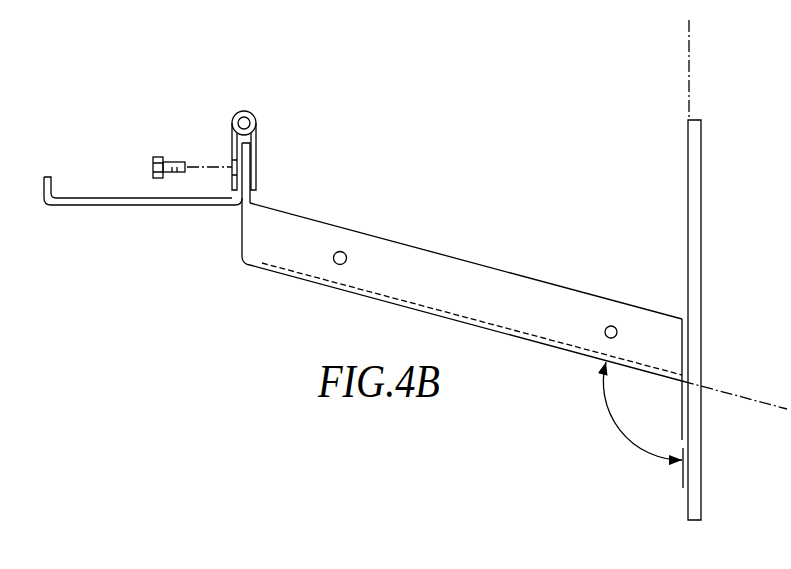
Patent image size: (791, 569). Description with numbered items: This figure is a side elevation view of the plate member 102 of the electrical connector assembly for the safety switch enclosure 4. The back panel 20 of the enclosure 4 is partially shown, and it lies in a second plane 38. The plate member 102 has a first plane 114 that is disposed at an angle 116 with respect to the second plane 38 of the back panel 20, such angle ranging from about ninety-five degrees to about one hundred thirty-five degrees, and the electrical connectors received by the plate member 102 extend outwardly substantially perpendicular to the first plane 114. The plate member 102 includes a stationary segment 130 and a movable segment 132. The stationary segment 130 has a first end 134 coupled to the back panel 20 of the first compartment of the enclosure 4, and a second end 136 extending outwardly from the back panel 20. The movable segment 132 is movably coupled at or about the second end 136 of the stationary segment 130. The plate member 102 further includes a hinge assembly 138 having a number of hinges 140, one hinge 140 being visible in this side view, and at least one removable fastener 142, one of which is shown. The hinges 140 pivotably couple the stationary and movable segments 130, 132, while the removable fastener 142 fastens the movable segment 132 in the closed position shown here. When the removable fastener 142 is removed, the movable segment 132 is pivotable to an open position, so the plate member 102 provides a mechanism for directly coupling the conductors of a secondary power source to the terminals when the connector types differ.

The enclosure 4 is at (690, 320).
The back panel 20 is at (688, 153).
The second plane 38 is at (689, 58).
The plate member 102 is at (402, 257).
The first plane 114 is at (735, 397).
The angle 116 is at (610, 425).
The stationary segment 130 is at (310, 282).
The movable segment 132 is at (118, 206).
The first end 134 is at (677, 413).
The second end 136 is at (240, 212).
The hinge assembly 138 is at (258, 117).
The hinge 140 is at (232, 118).
The removable fastener 142 is at (173, 160).